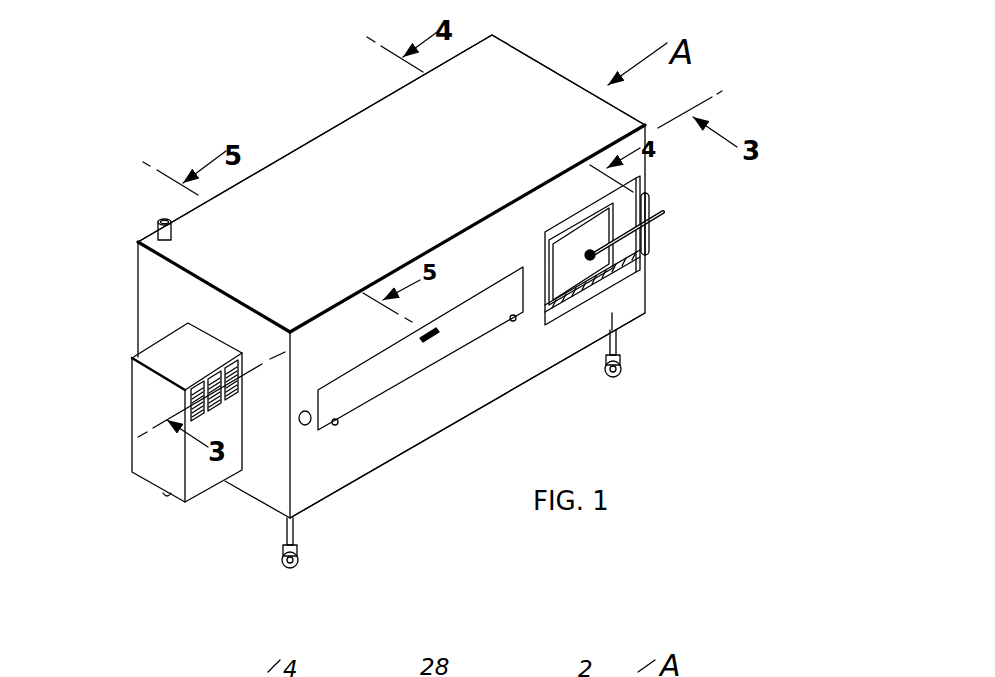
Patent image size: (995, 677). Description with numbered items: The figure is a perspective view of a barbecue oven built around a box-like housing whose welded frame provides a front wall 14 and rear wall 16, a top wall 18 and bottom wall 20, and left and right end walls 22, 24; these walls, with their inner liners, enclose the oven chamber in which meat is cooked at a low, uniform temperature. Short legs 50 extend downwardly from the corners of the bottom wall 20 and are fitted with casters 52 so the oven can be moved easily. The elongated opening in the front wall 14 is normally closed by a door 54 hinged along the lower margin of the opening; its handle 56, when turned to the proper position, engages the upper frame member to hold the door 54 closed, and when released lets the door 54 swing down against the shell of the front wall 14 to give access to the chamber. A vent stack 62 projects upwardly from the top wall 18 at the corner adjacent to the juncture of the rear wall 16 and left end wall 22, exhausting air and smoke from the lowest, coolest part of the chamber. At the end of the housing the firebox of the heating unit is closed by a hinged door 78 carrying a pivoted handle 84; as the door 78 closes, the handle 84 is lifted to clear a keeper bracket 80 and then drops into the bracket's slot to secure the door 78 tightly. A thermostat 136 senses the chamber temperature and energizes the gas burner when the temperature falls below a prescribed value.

The front wall 14 is at (415, 423).
The rear wall 16 is at (377, 98).
The top wall 18 is at (318, 160).
The bottom wall 20 is at (348, 489).
The left end wall 22 is at (148, 298).
The right end wall 24 is at (543, 62).
The legs 50 is at (288, 536).
The casters 52 is at (286, 562).
The door 54 is at (368, 385).
The handle 56 is at (433, 333).
The vent stack 62 is at (155, 228).
The door 78 is at (563, 278).
The keeper bracket 80 is at (650, 245).
The handle 84 is at (663, 218).
The thermostat 136 is at (305, 428).